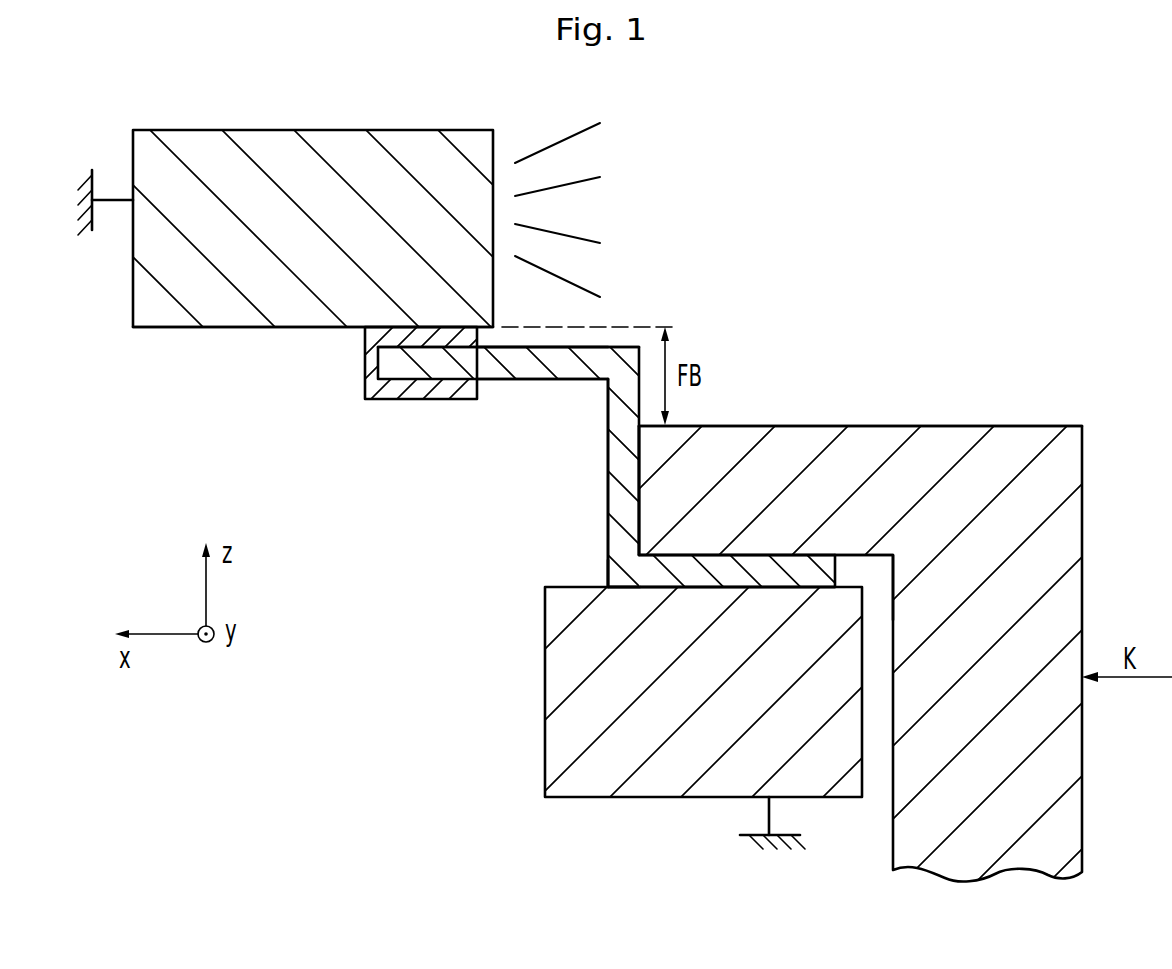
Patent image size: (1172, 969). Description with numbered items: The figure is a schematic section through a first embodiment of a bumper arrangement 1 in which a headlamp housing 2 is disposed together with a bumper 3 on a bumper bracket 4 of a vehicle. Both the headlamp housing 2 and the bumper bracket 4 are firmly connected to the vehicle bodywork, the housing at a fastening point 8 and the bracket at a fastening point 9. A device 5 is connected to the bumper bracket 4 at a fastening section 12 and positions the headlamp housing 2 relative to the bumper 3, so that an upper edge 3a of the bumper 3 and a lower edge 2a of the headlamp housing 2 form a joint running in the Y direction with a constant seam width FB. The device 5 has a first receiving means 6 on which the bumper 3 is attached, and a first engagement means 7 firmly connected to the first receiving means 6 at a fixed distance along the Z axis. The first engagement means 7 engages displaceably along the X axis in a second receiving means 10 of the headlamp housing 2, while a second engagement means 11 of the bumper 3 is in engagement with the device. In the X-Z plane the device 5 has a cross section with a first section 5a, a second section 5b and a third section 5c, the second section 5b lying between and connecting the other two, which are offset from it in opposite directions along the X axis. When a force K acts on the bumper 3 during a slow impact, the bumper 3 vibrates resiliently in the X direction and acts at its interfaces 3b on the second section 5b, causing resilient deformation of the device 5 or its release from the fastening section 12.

The bumper arrangement 1 is at (985, 140).
The headlamp housing 2 is at (350, 148).
The lower edge of the headlamp housing 2a is at (255, 328).
The bumper 3 is at (1082, 517).
The upper edge of the bumper 3a is at (948, 426).
The interfaces of the bumper 3b is at (641, 466).
The bumper bracket 4 is at (700, 798).
The device 5 is at (594, 448).
The first section 5a is at (583, 346).
The second section 5b is at (608, 525).
The third section 5c is at (702, 588).
The first receiving means 6 is at (777, 572).
The first engagement means 7 is at (486, 368).
The fastening point 8 is at (108, 200).
The fastening point 9 is at (772, 816).
The second receiving means 10 is at (406, 400).
The second engagement means 11 is at (876, 557).
The fastening section 12 is at (640, 588).